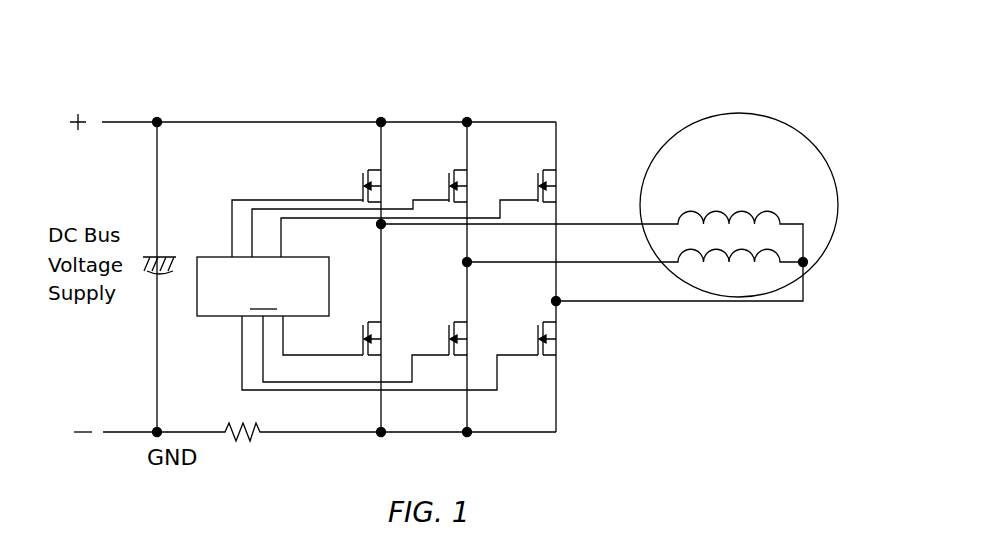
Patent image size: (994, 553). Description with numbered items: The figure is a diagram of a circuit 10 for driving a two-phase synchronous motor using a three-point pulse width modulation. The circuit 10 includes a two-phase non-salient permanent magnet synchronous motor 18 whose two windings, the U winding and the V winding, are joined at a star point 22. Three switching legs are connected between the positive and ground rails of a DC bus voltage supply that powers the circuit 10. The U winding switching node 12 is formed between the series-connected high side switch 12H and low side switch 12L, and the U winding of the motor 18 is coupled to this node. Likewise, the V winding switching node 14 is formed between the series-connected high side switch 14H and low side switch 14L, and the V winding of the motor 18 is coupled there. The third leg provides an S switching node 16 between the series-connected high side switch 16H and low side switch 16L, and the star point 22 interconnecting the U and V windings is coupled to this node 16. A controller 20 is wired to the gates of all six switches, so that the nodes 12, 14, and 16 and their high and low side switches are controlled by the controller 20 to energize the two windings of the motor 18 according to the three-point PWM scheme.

The circuit 10 is at (203, 97).
The U winding switching node 12 is at (344, 247).
The high side switch 12H is at (366, 186).
The low side switch 12L is at (366, 339).
The V winding switching node 14 is at (439, 241).
The high side switch 14H is at (461, 165).
The low side switch 14L is at (452, 339).
The S switching node 16 is at (559, 277).
The high side switch 16H is at (534, 180).
The low side switch 16L is at (534, 339).
The two-phase non-salient PMSM 18 is at (746, 160).
The controller 20 is at (367, 295).
The star point 22 is at (813, 284).